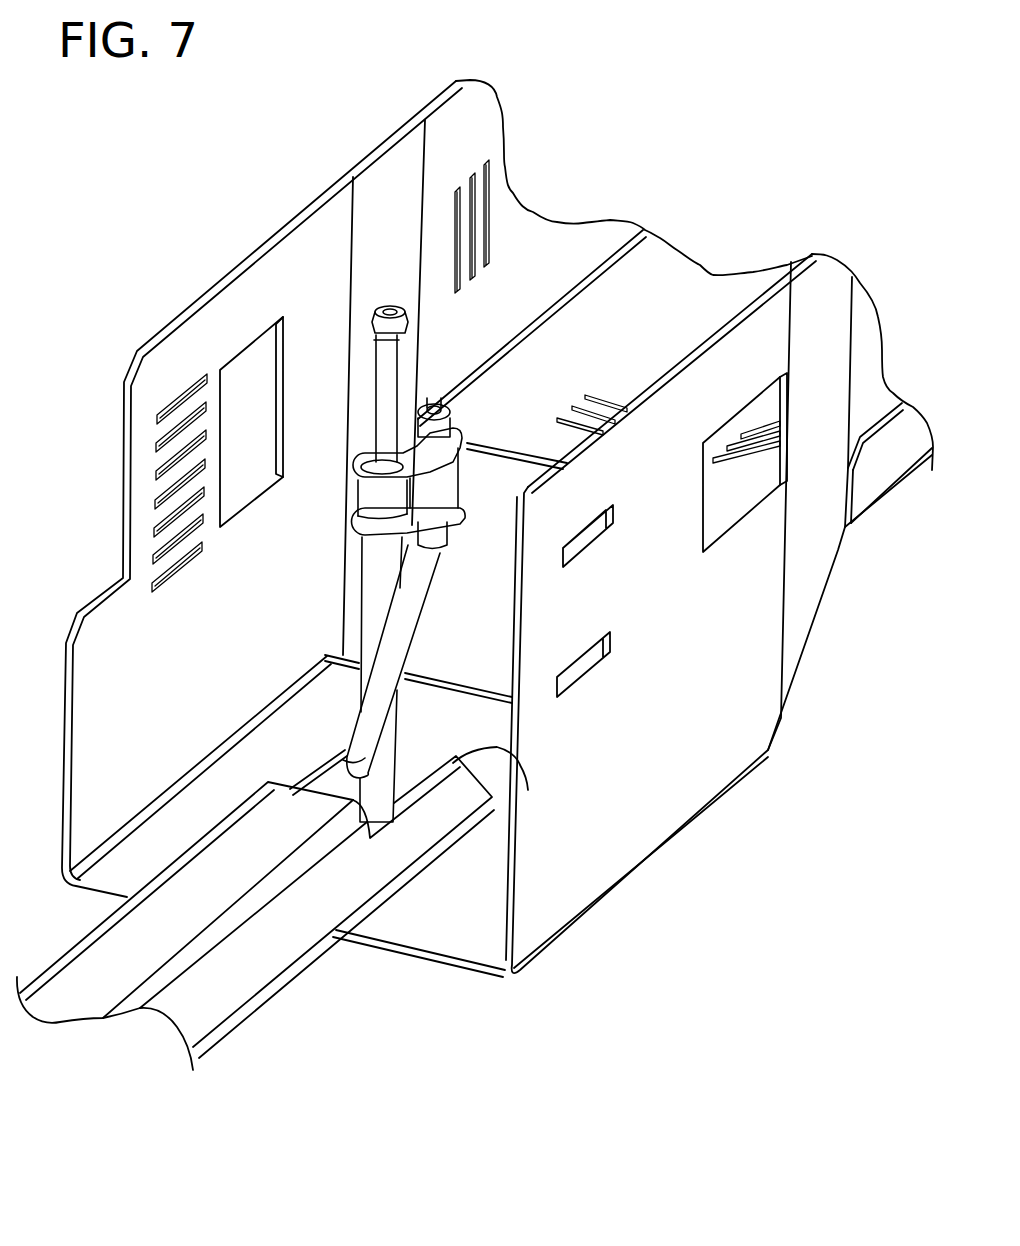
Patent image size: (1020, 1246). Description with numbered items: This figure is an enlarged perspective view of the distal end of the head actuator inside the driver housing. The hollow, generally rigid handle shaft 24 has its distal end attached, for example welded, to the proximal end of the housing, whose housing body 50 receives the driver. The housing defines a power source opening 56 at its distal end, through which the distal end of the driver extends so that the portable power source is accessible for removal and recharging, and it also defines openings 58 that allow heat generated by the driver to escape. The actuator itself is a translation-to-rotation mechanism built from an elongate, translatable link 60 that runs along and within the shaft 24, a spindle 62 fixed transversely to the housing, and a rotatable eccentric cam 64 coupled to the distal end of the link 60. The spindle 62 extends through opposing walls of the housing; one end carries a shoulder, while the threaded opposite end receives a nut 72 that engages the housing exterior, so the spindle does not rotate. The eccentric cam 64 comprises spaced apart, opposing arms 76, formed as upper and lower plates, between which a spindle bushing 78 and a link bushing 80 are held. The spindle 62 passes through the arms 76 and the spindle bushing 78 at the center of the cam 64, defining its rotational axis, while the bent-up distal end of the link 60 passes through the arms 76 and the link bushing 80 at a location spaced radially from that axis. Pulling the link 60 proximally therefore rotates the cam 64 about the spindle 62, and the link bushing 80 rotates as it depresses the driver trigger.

The shaft 24 is at (112, 952).
The housing body 50 is at (713, 760).
The power source opening 56 is at (510, 921).
The openings 58 is at (160, 450).
The link 60 is at (373, 720).
The spindle 62 is at (375, 607).
The eccentric cam 64 is at (474, 467).
The nut 72 is at (373, 318).
The opposing arms 76 is at (447, 398).
The spindle bushing 78 is at (372, 493).
The link bushing 80 is at (445, 493).